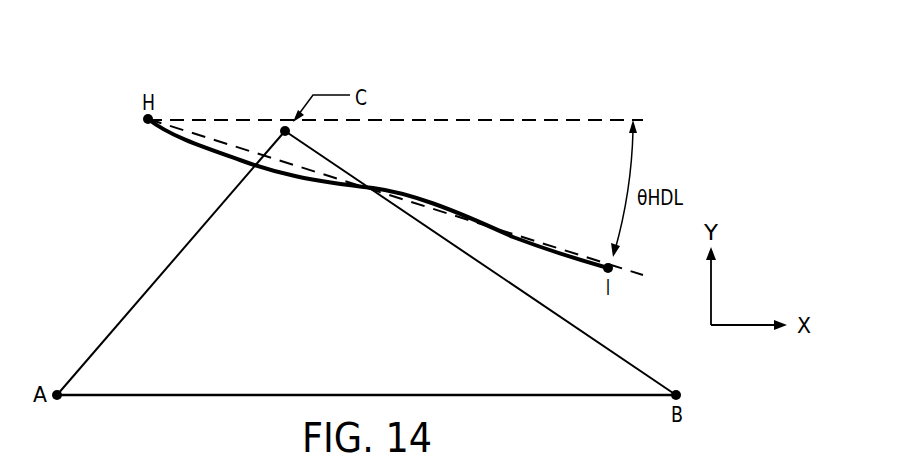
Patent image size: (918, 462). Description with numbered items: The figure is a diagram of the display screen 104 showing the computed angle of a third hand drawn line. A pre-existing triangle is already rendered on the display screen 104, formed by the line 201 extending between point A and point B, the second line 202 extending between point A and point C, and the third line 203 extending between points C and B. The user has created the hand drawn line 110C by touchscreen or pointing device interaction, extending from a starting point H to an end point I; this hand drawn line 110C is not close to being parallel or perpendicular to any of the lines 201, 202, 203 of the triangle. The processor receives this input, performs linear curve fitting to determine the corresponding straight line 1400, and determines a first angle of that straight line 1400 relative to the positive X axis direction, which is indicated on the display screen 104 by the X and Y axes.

The display screen 104 is at (499, 67).
The straight line 1400 is at (208, 138).
The hand drawn line 110C is at (197, 147).
The line 201 is at (178, 398).
The second line 202 is at (172, 262).
The third line 203 is at (613, 352).